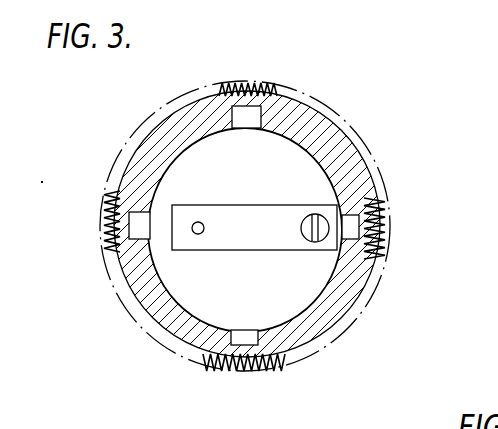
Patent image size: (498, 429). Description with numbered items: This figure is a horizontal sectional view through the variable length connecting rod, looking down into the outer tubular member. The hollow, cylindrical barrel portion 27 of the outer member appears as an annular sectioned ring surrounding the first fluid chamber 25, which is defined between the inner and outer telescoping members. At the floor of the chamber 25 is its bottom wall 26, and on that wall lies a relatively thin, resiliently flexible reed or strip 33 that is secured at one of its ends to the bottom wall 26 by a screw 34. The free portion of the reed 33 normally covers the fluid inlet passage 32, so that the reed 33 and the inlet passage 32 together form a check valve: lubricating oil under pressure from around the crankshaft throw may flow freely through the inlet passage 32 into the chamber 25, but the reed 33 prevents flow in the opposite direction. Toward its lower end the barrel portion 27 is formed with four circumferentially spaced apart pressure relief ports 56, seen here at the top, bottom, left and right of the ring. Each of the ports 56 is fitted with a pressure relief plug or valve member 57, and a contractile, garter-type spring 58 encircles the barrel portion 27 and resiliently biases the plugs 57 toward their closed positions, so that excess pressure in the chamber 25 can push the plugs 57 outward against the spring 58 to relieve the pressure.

The first fluid chamber 25 is at (220, 284).
The bottom wall 26 is at (296, 157).
The barrel portion 27 is at (330, 305).
The fluid inlet passage 32 is at (194, 222).
The reed 33 is at (238, 206).
The screw 34 is at (307, 217).
The pressure relief ports 56 is at (233, 115).
The pressure relief plugs 57 is at (264, 112).
The garter-type spring 58 is at (297, 386).